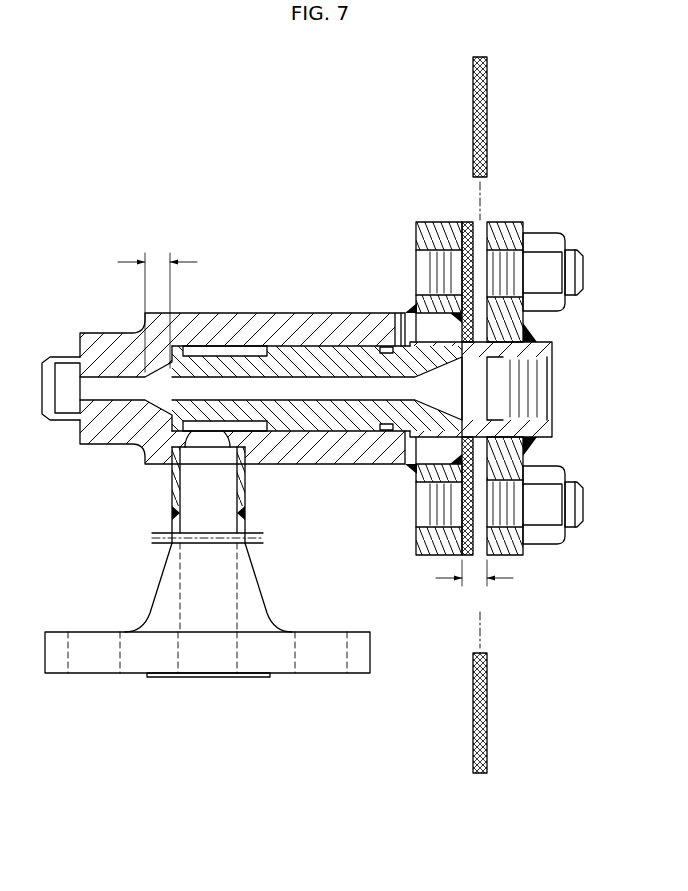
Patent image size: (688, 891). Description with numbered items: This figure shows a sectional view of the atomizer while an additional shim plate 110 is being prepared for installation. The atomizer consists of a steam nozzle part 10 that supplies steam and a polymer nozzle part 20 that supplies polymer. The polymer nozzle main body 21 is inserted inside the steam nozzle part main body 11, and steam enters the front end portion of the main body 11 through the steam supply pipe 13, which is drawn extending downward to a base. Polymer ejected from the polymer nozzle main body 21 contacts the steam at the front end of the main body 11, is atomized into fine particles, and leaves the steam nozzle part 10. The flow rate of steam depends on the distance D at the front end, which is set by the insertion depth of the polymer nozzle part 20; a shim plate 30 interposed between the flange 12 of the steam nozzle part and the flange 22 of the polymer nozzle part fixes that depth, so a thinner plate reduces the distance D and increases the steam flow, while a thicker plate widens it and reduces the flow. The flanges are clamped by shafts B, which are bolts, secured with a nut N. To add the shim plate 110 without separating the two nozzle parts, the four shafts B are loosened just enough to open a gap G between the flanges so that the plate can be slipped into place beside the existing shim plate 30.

The steam nozzle part 10 is at (110, 453).
The steam nozzle part main body 11 is at (250, 318).
The flange of the steam nozzle part 12 is at (428, 222).
The steam supply pipe 13 is at (157, 592).
The polymer nozzle part 20 is at (327, 333).
The polymer nozzle main body 21 is at (289, 356).
The flange of the polymer nozzle part 22 is at (502, 222).
The shim plate 30 is at (467, 222).
The plate 110 is at (487, 141).
The nut N is at (547, 233).
The shaft B is at (579, 255).
The distance D is at (157, 301).
The flange gap G is at (474, 586).